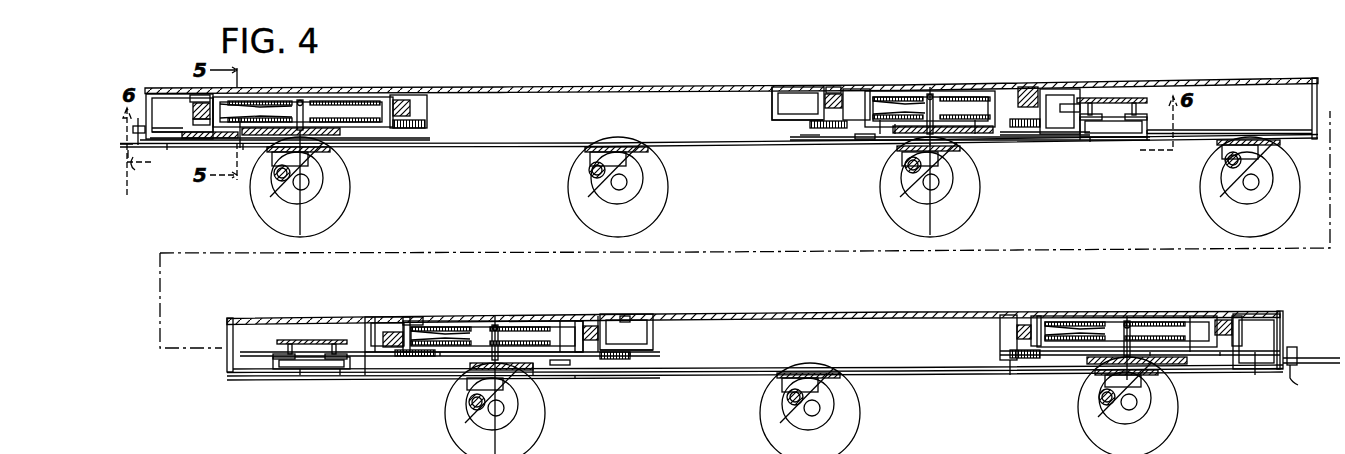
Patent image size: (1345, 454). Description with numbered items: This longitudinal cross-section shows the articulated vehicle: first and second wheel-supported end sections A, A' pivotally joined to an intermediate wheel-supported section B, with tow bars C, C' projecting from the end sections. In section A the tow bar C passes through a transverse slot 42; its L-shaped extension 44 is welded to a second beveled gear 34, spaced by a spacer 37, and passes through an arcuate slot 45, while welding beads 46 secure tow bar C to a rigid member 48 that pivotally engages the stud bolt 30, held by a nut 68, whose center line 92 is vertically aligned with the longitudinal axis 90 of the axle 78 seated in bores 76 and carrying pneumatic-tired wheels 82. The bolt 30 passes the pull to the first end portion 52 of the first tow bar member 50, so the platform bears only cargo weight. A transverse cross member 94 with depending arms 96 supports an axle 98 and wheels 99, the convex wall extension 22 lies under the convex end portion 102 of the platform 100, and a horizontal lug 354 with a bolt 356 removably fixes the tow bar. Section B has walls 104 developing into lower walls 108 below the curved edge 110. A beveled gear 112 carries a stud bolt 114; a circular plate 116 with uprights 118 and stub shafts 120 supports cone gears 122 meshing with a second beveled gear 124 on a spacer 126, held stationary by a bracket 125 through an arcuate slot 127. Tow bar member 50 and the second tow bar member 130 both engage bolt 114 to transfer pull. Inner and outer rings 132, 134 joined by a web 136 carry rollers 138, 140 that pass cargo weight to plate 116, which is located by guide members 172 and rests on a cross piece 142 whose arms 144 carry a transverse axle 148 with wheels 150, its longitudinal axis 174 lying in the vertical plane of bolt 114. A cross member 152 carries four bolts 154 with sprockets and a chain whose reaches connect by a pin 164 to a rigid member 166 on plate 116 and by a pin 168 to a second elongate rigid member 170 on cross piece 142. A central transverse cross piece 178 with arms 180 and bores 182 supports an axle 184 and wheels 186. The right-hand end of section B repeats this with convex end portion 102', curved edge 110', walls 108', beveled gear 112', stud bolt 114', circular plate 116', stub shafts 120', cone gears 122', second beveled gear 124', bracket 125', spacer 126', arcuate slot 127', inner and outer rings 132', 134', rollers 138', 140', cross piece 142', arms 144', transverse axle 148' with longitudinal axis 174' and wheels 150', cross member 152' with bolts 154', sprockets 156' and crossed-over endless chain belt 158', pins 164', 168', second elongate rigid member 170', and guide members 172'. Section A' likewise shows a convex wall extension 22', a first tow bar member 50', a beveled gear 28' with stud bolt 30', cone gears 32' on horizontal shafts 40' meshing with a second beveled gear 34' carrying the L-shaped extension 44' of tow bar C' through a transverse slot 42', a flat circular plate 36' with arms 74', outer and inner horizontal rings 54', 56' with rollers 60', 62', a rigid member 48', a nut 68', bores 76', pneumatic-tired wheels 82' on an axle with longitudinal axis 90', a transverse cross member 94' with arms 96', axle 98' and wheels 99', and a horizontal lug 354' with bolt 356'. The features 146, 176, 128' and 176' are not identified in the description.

The drawer slide assembly 100 is at (1237, 80).
The rail body 104 is at (1287, 112).
The track rail 50 is at (719, 133).
The track rail 50' is at (755, 360).
The slide section A is at (362, 97).
The slide section B is at (1167, 81).
The slide section A' is at (576, 315).
The track section C is at (135, 162).
The track section C' is at (1311, 344).
The end housing 42 is at (179, 116).
The end bracket 354 is at (154, 99).
The end fitting 356 is at (146, 172).
The tube housing 44 is at (303, 95).
The spring 37 is at (323, 117).
The sleeve 34 is at (308, 95).
The pin 52 is at (285, 132).
The base plate 45 is at (233, 140).
The guide strip 48 is at (290, 165).
The support 46 is at (167, 150).
The caster wheel 82 is at (319, 187).
The wheel hub 30 is at (310, 178).
The fork arm 68 is at (309, 170).
The axle bolt 76 is at (276, 190).
The hub 90 is at (331, 202).
The swivel axis 92 is at (300, 240).
The caster mount 78 is at (295, 230).
The caster wheel 99 is at (636, 187).
The caster mount plate 94 is at (632, 140).
The fork 96 is at (643, 173).
The hub 98 is at (616, 191).
The housing 108 is at (773, 103).
The housing wall 110 is at (786, 87).
The clip 172 is at (807, 66).
The block 102 is at (825, 79).
The inner housing 125 is at (872, 86).
The tube 112 is at (930, 91).
The spring 118 is at (947, 105).
The pin 122 is at (924, 84).
The pin head 120 is at (945, 99).
The base plate 114 is at (943, 142).
The bearing block 116 is at (826, 142).
The strip 22 is at (805, 156).
The bracket 127 is at (857, 148).
The link 142 is at (855, 149).
The link 144 is at (868, 160).
The fork arm 146 is at (900, 197).
The link 124 is at (1000, 142).
The wheel hub 126 is at (963, 178).
The hub 174 is at (973, 185).
The caster wheel 150 is at (952, 187).
The axle bolt 148 is at (948, 188).
The swivel axis 176 is at (958, 194).
The block 132 is at (1021, 79).
The housing 138 is at (1053, 84).
The bearing 134 is at (1048, 89).
The spacer 136 is at (1076, 97).
The guide 140 is at (1045, 147).
The plate 152 is at (1119, 72).
The legs 154 is at (1133, 90).
The block 168 is at (1113, 126).
The tab 164 is at (1107, 148).
The tab 166 is at (1080, 140).
The tab 170 is at (1146, 159).
The rail wall 130 is at (1193, 130).
The caster wheel 186 is at (1253, 220).
The caster mount 178 is at (1200, 158).
The fork 180 is at (1267, 153).
The hub 184 is at (1245, 188).
The axle bolt 182 is at (1233, 190).
The top bar 102' is at (753, 292).
The end plate 354' is at (776, 338).
The end fitting 356' is at (1312, 380).
The plate 152' is at (312, 317).
The legs 154' is at (312, 337).
The plate 156' is at (264, 358).
The plate 158' is at (322, 377).
The block 168' is at (294, 383).
The tab 170' is at (306, 391).
The tab 164' is at (330, 400).
The housing 172' is at (515, 326).
The wall 132' is at (513, 315).
The block 138' is at (517, 320).
The bearing 134' is at (516, 305).
The guide 140' is at (518, 373).
The tube 142' is at (493, 321).
The link 124' is at (428, 377).
The base plate 114' is at (458, 390).
The pin 122' is at (483, 315).
The pin head 120' is at (508, 332).
The spring 126' is at (487, 318).
The tube wall 112' is at (565, 312).
The inner housing 125' is at (586, 323).
The housing wall 110' is at (655, 311).
The housing 108' is at (652, 341).
The bearing block 116' is at (637, 358).
The bracket 127' is at (587, 368).
The link 144' is at (560, 380).
The strip 22' is at (590, 386).
The caster wheel 150' is at (469, 408).
The hub 174' is at (530, 404).
The axle bolt 148' is at (529, 400).
The swivel axis 176' is at (522, 416).
The caster wheel 99' is at (831, 408).
The caster mount 94' is at (825, 366).
The fork 96' is at (838, 399).
The hub 98' is at (815, 419).
The housing 54' is at (991, 337).
The block 60' is at (1136, 305).
The wall 56' is at (1155, 315).
The tube 28' is at (1127, 316).
The spring 40' is at (1115, 312).
The pin 32' is at (1151, 321).
The tube wall 44' is at (1204, 318).
The end housing 42' is at (1256, 341).
The base plate 74' is at (1117, 391).
The bearing block 36' is at (1025, 374).
The support 62' is at (1128, 375).
The guide strip 34' is at (1140, 373).
The link 128' is at (1190, 377).
The guide strip 48' is at (1243, 381).
The caster wheel 82' is at (1151, 405).
The wheel hub 30' is at (1141, 398).
The fork arm 68' is at (1139, 390).
The axle bolt 76' is at (1105, 416).
The hub 90' is at (1129, 409).